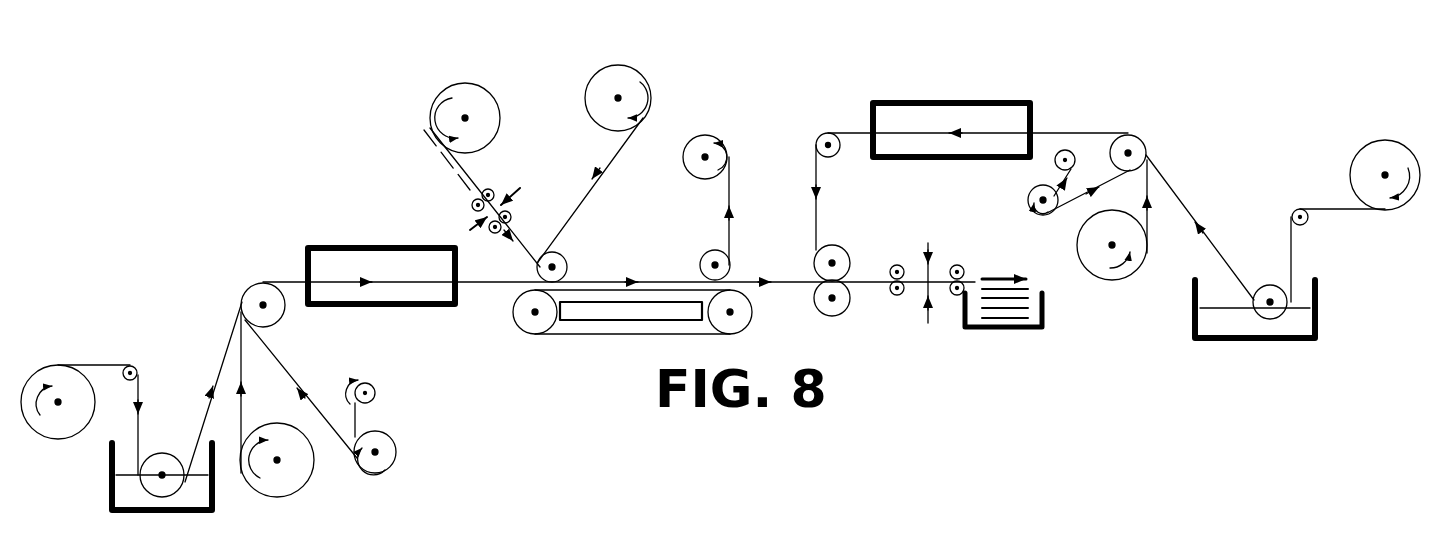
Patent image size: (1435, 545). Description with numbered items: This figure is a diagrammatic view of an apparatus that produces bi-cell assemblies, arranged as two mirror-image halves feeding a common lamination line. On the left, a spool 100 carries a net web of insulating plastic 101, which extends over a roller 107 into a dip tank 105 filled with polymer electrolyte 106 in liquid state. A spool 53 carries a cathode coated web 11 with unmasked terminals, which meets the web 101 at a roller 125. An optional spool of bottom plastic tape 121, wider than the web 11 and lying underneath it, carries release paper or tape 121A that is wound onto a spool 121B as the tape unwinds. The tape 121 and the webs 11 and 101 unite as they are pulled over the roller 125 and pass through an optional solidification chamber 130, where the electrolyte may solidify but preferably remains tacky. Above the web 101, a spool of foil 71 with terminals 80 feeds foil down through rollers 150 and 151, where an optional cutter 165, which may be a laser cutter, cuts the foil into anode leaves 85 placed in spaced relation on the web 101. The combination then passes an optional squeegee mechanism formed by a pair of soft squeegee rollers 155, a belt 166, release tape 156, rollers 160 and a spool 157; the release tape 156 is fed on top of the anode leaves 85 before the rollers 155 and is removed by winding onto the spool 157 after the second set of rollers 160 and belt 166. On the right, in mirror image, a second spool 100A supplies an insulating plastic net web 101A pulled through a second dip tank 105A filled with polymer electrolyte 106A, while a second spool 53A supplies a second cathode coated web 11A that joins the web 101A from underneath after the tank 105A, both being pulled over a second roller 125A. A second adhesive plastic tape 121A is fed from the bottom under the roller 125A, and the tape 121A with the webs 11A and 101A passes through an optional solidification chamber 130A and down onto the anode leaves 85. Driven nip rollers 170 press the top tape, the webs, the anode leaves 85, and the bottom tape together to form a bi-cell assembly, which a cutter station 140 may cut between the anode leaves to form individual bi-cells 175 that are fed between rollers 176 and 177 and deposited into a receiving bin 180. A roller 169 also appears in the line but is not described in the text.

The spool 100 is at (70, 367).
The net web of insulating plastic 101 is at (118, 364).
The dip tank 105 is at (110, 478).
The polymer electrolyte 106 is at (200, 494).
The roller 107 is at (158, 488).
The roller 125 is at (246, 298).
The cathode coated web 11 is at (245, 408).
The spool 53 is at (290, 472).
The bottom plastic tape 121 is at (397, 448).
The release paper or tape 121A is at (278, 355).
The spool 121B is at (376, 390).
The solidification chamber 130 is at (380, 243).
The spool of foil 71 is at (482, 97).
The terminals 80 is at (452, 168).
The rollers 150 is at (490, 187).
The rollers 151 is at (513, 217).
The cutter 165 is at (472, 228).
The anode leaves 85 is at (527, 262).
The spool 157 is at (685, 153).
The release tape 156 is at (585, 203).
The soft squeegee rollers 155 is at (528, 328).
The rollers 160 is at (743, 320).
The belt 166 is at (633, 335).
The roller 169 is at (815, 133).
The solidification chamber 130A is at (947, 100).
The driven nip rollers 170 is at (837, 310).
The rollers 176 is at (892, 293).
The rollers 177 is at (953, 294).
The cutter station 140 is at (893, 233).
The individual bi-cells 175 is at (1003, 313).
The receiving bin 180 is at (1043, 318).
The second roller 125A is at (1137, 140).
The second cathode coated web 11A is at (1148, 213).
The second spool 53A is at (1107, 273).
The insulating plastic net web 101A is at (1187, 195).
The second dip tank 105A is at (1232, 344).
The polymer electrolyte 106A is at (1307, 323).
The second spool 100A is at (1375, 152).